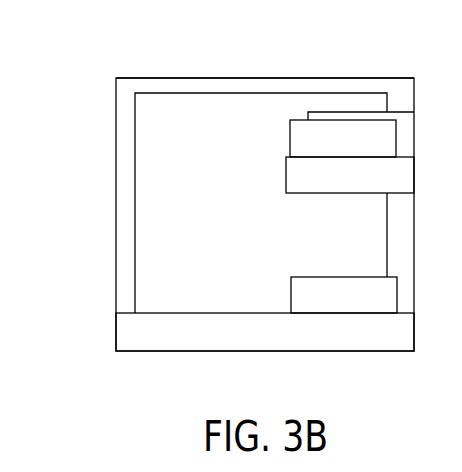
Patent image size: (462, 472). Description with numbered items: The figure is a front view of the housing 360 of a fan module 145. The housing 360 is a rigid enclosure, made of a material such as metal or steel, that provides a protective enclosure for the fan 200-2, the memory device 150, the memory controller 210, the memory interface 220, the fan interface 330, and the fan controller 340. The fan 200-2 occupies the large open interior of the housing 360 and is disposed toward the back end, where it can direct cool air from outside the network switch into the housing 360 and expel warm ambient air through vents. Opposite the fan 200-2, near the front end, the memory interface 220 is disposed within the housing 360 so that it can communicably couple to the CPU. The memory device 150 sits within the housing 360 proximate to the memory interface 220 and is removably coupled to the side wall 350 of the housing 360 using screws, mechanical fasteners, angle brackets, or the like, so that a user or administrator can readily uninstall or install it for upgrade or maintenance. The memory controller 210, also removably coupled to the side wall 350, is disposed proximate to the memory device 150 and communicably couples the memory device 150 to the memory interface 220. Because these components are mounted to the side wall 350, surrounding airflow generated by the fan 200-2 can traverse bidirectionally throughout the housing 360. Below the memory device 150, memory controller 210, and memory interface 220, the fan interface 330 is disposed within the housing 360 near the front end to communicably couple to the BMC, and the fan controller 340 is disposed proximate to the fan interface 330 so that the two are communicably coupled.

The fan module 145 is at (96, 49).
The housing 360 is at (264, 70).
The memory device 150 is at (398, 104).
The memory interface 220 is at (327, 149).
The memory controller 210 is at (335, 185).
The side wall 350 is at (404, 233).
The fan 200-2 is at (238, 234).
The fan interface 330 is at (328, 305).
The fan controller 340 is at (249, 342).